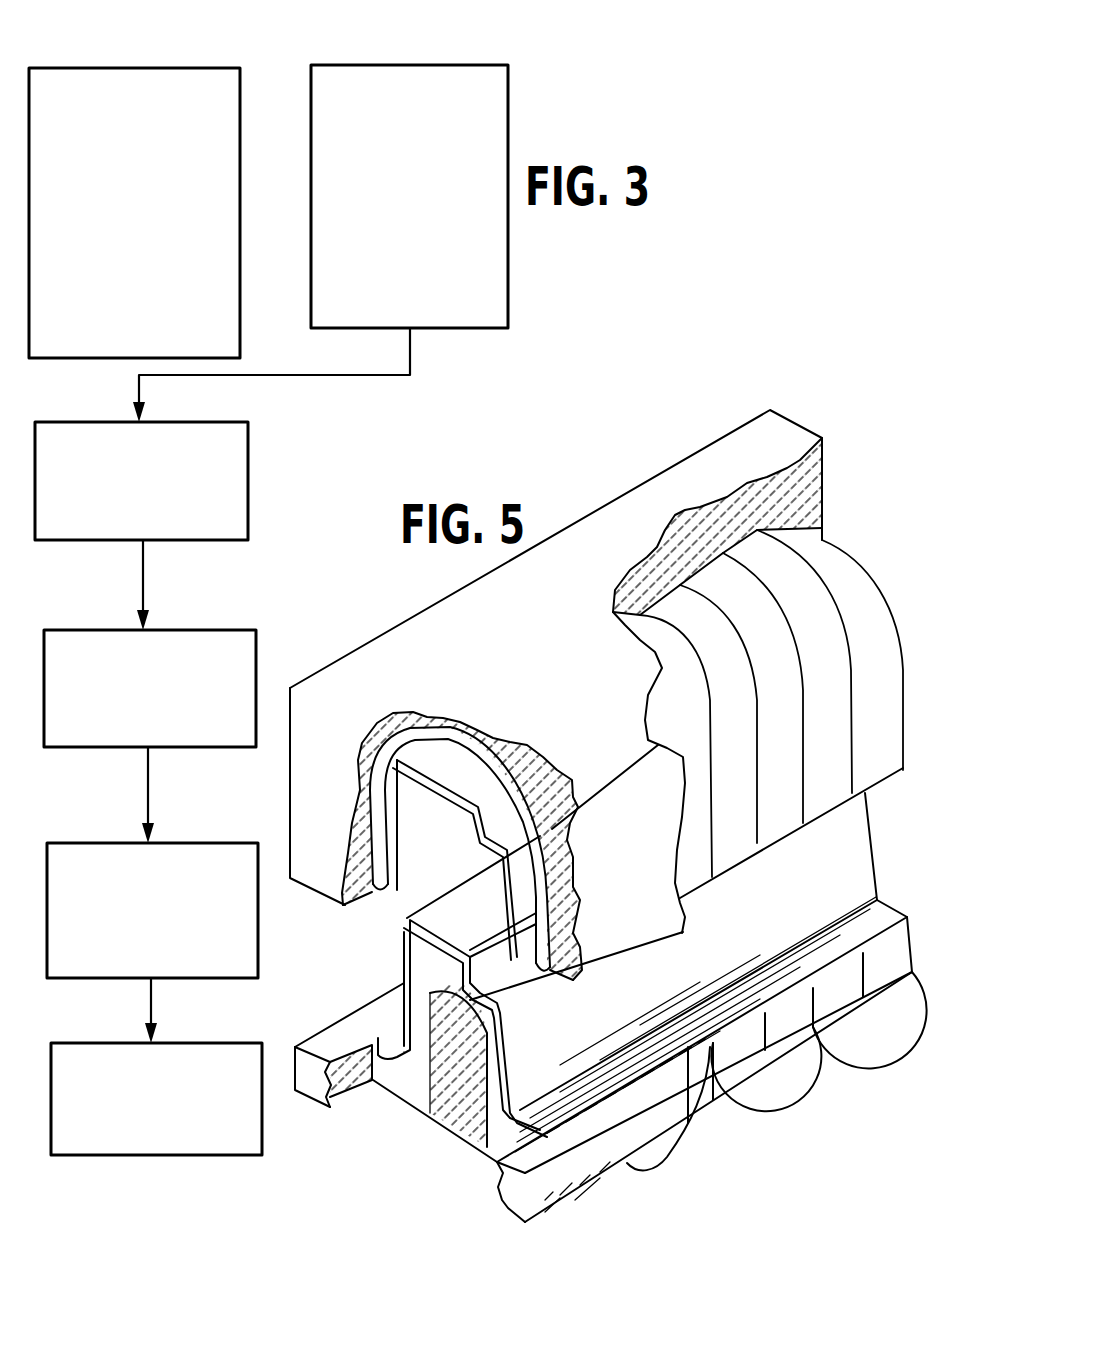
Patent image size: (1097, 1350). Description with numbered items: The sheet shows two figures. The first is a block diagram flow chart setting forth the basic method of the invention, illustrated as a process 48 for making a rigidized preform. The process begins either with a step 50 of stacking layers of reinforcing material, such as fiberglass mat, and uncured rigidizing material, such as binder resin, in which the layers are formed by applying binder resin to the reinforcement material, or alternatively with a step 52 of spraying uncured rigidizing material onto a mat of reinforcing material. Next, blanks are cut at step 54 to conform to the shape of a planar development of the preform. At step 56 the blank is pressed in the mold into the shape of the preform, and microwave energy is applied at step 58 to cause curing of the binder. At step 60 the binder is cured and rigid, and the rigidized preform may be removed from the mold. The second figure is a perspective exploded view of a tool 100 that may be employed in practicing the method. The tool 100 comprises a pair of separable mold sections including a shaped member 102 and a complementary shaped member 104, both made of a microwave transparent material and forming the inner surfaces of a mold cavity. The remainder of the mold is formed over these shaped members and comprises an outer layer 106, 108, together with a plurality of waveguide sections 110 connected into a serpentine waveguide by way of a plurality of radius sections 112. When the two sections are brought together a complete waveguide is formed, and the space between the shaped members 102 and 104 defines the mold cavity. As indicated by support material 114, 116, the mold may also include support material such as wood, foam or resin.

In FIG. 3, the process 48 is at (316, 48).
In FIG. 3, the stacking step 50 is at (222, 68).
In FIG. 3, the spraying step 52 is at (311, 103).
In FIG. 3, the blank cutting step 54 is at (238, 448).
In FIG. 3, the pressing step 56 is at (238, 636).
In FIG. 3, the microwave energy application step 58 is at (242, 848).
In FIG. 3, the removal step 60 is at (227, 1056).
In FIG. 5, the tool 100 is at (705, 425).
In FIG. 5, the shaped member 102 is at (390, 944).
In FIG. 5, the shaped member 104 is at (402, 894).
In FIG. 5, the outer layer 106 is at (516, 1198).
In FIG. 5, the outer layer 108 is at (370, 658).
In FIG. 5, the waveguide sections 110 is at (880, 578).
In FIG. 5, the radius sections 112 is at (830, 1026).
In FIG. 5, the support material 114 is at (408, 1083).
In FIG. 5, the support material 116 is at (453, 1127).